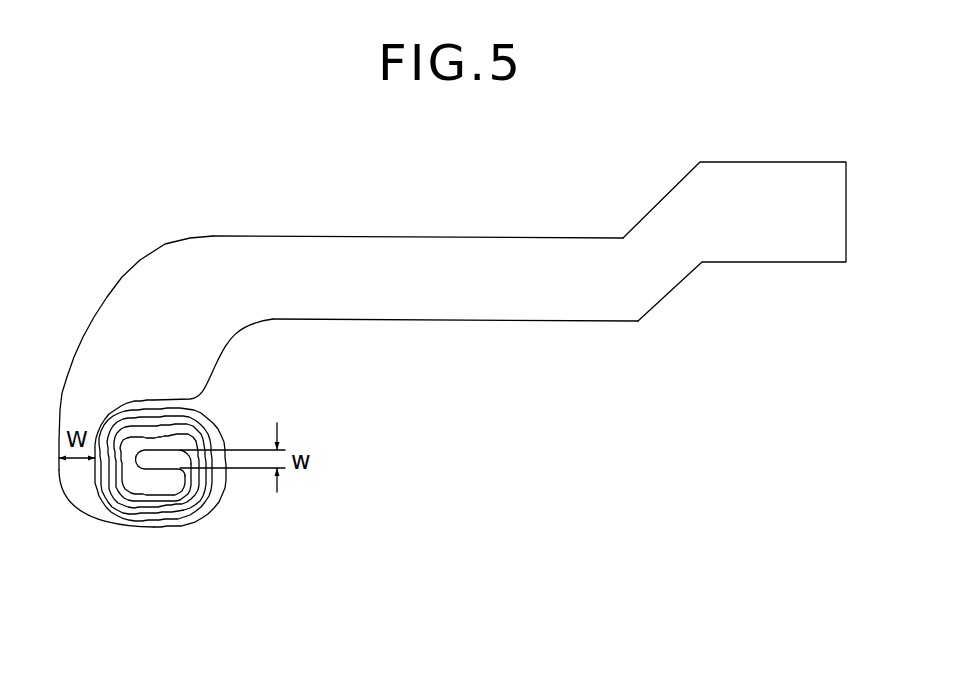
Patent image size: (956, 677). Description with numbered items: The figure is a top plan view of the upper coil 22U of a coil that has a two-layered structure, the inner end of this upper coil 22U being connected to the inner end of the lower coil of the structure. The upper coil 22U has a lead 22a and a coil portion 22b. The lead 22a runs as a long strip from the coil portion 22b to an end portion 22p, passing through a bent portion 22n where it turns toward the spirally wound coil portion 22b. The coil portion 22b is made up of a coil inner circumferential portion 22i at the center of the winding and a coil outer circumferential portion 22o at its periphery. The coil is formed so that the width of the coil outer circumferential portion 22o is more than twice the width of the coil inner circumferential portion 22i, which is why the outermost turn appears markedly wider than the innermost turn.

The upper coil 22U is at (238, 218).
The lead 22a is at (420, 257).
The widened end portion 22p is at (733, 183).
The bent portion 22n is at (135, 311).
The coil outer circumferential portion 22o is at (82, 483).
The coil portion 22b is at (150, 513).
The coil inner circumferential portion 22i is at (164, 460).